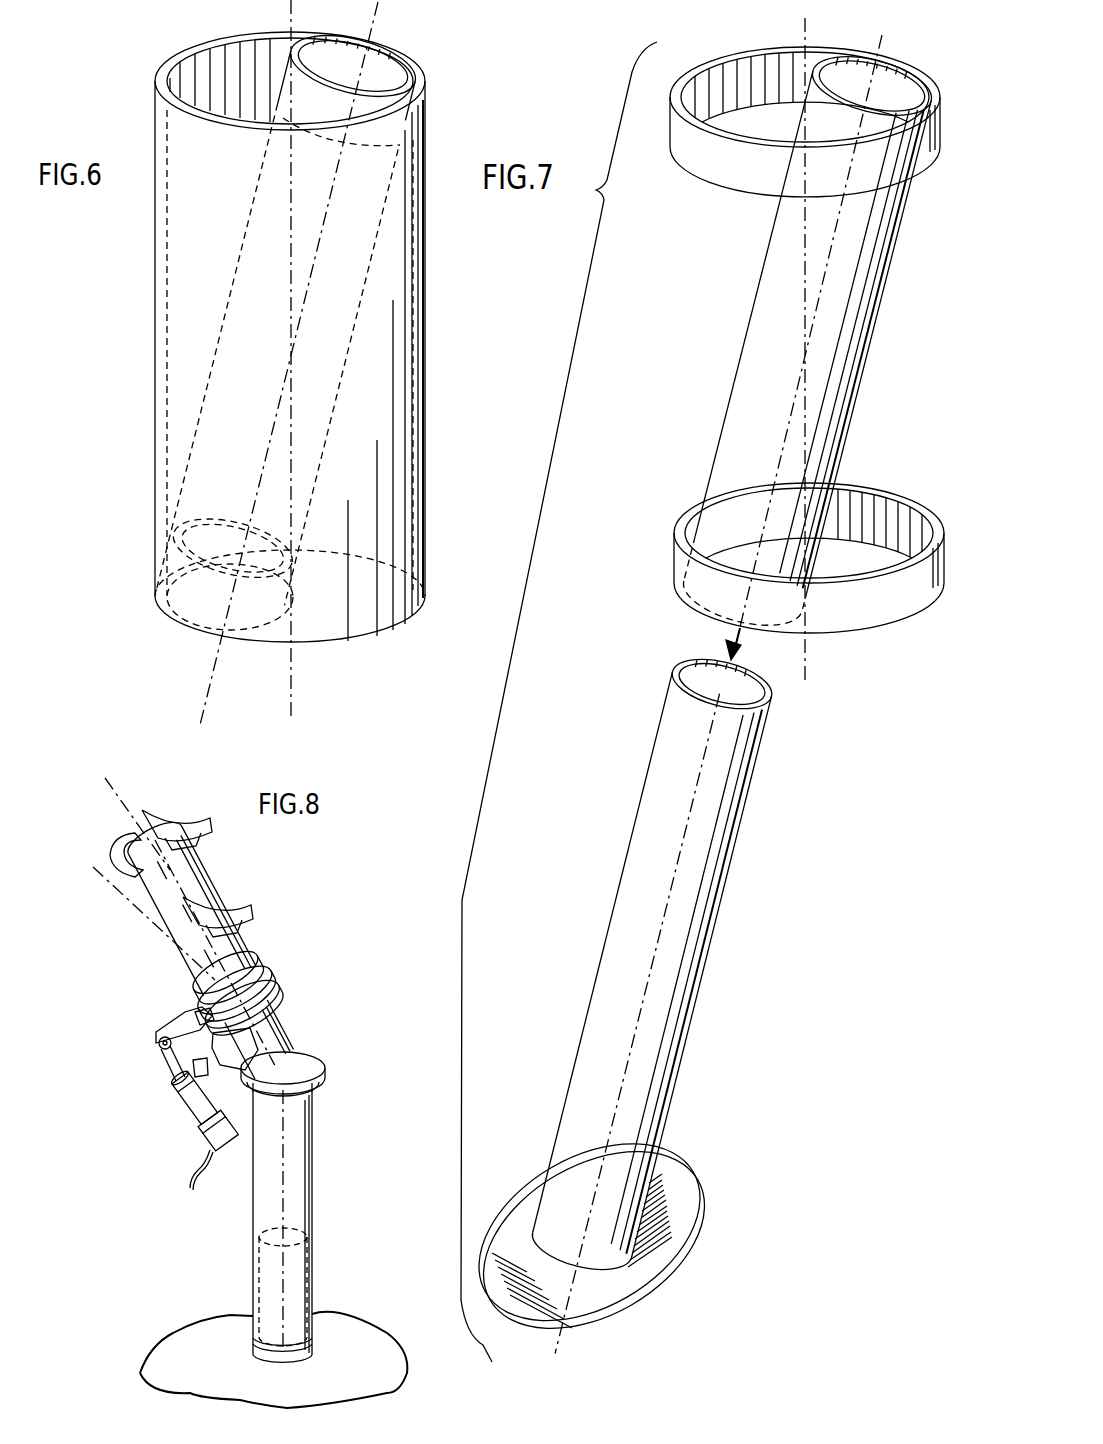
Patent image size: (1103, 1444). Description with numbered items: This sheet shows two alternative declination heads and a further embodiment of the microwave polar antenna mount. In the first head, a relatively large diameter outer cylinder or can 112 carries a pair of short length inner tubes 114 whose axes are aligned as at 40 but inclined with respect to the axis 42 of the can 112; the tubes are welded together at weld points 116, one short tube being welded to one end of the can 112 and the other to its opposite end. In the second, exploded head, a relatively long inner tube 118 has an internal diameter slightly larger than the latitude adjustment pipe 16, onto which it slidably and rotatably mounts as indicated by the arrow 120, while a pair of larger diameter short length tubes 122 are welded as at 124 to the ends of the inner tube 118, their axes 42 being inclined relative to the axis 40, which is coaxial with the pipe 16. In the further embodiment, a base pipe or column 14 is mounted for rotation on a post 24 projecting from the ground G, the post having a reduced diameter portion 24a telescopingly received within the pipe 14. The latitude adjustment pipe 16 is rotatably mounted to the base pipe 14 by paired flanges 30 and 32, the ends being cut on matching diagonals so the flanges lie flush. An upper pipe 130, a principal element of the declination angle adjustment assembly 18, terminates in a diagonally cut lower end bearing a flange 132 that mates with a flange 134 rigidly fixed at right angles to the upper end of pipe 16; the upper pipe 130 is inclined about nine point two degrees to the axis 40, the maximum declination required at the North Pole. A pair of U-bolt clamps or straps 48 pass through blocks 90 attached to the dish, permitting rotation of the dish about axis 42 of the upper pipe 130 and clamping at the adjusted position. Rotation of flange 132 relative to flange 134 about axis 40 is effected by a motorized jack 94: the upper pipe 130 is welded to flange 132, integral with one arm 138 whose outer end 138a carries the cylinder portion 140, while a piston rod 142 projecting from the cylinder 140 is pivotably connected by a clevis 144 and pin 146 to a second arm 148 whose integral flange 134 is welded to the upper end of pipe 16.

In FIG. 8, the base pipe 14 is at (253, 1290).
In FIG. 7, the latitude adjustment pipe 16 is at (640, 850).
In FIG. 8, the latitude adjustment pipe 16 is at (268, 1028).
In FIG. 8, the declination angle adjustment assembly 18 is at (172, 976).
In FIG. 8, the post 24 is at (258, 1348).
In FIG. 8, the reduced diameter portion 24a is at (258, 1256).
In FIG. 8, the flange 30 is at (318, 1080).
In FIG. 7, the flange 32 is at (665, 1238).
In FIG. 8, the flange 32 is at (316, 1052).
In FIG. 6, the axis 40 is at (268, 445).
In FIG. 7, the axis 40 is at (798, 420).
In FIG. 8, the axis 40 is at (110, 880).
In FIG. 6, the axis 42 is at (289, 195).
In FIG. 7, the axis 42 is at (802, 215).
In FIG. 8, the axis 42 is at (108, 790).
In FIG. 8, the U-bolt clamps 48 is at (122, 860).
In FIG. 8, the block 90 is at (175, 822).
In FIG. 8, the motorized jack 94 is at (196, 1153).
In FIG. 6, the outer cylinder 112 is at (190, 392).
In FIG. 6, the inner tubes 114 is at (290, 95).
In FIG. 6, the weld points 116 is at (410, 72).
In FIG. 7, the inner tube 118 is at (752, 328).
In FIG. 7, the arrow 120 is at (730, 648).
In FIG. 7, the short length tubes 122 is at (700, 152).
In FIG. 7, the weld 124 is at (930, 52).
In FIG. 8, the upper pipe 130 is at (238, 953).
In FIG. 8, the flange 132 is at (258, 972).
In FIG. 8, the flange 134 is at (268, 1006).
In FIG. 8, the arm 138 is at (218, 1064).
In FIG. 8, the outer end 138a is at (203, 1077).
In FIG. 8, the cylinder portion 140 is at (185, 1112).
In FIG. 8, the piston rod 142 is at (172, 1064).
In FIG. 8, the clevis 144 is at (158, 1030).
In FIG. 8, the pin 146 is at (160, 1046).
In FIG. 8, the second arm 148 is at (200, 1022).
In FIG. 8, the ground G is at (333, 1340).